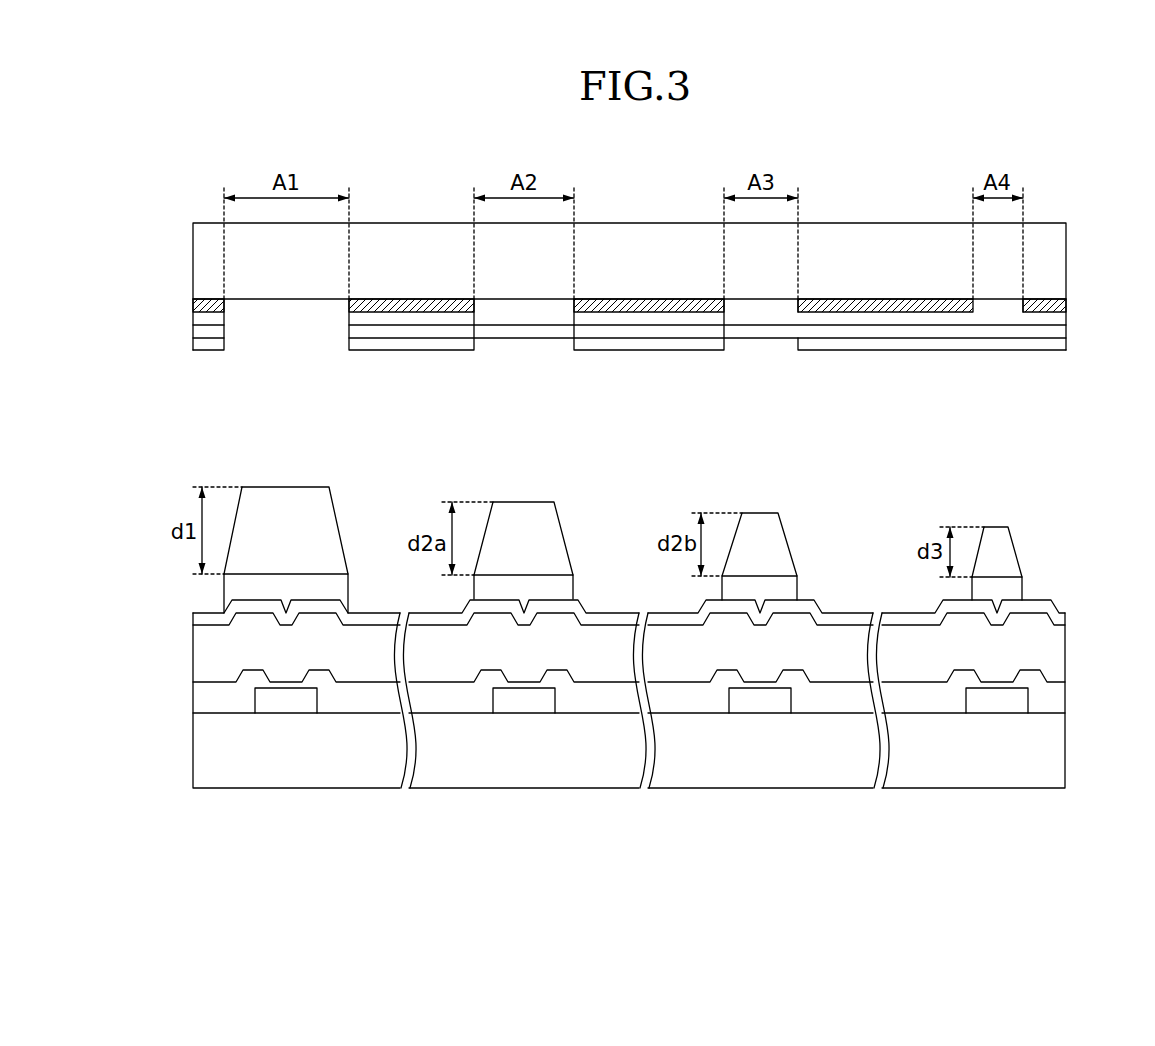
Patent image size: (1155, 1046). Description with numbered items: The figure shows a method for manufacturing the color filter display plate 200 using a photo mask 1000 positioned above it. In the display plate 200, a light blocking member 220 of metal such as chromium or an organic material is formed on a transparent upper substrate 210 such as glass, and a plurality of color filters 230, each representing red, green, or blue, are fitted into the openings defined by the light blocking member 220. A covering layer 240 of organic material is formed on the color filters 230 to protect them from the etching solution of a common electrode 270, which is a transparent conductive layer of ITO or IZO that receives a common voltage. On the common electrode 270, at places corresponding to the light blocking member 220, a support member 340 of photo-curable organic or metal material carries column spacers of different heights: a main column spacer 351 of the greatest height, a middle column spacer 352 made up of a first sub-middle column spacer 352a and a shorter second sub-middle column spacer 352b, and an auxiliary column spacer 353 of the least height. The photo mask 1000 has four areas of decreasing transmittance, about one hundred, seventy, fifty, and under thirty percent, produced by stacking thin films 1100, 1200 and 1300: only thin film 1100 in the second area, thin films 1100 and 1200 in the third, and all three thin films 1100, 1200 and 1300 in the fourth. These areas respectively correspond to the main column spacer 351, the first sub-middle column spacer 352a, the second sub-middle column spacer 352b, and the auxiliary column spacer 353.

The color filter display plate 200 is at (1068, 455).
The upper substrate 210 is at (590, 762).
The light blocking member 220 is at (522, 703).
The color filter 230 is at (830, 703).
The covering layer 240 is at (925, 662).
The common electrode 270 is at (612, 618).
The support member 340 is at (318, 587).
The main column spacer 351 is at (287, 502).
The middle column spacer 352 is at (777, 441).
The first sub-middle column spacer 352a is at (522, 517).
The second sub-middle column spacer 352b is at (758, 528).
The auxiliary column spacer 353 is at (995, 542).
The photo mask 1000 is at (1048, 263).
The thin film 1100 is at (1048, 321).
The thin film 1200 is at (955, 330).
The thin film 1300 is at (880, 345).